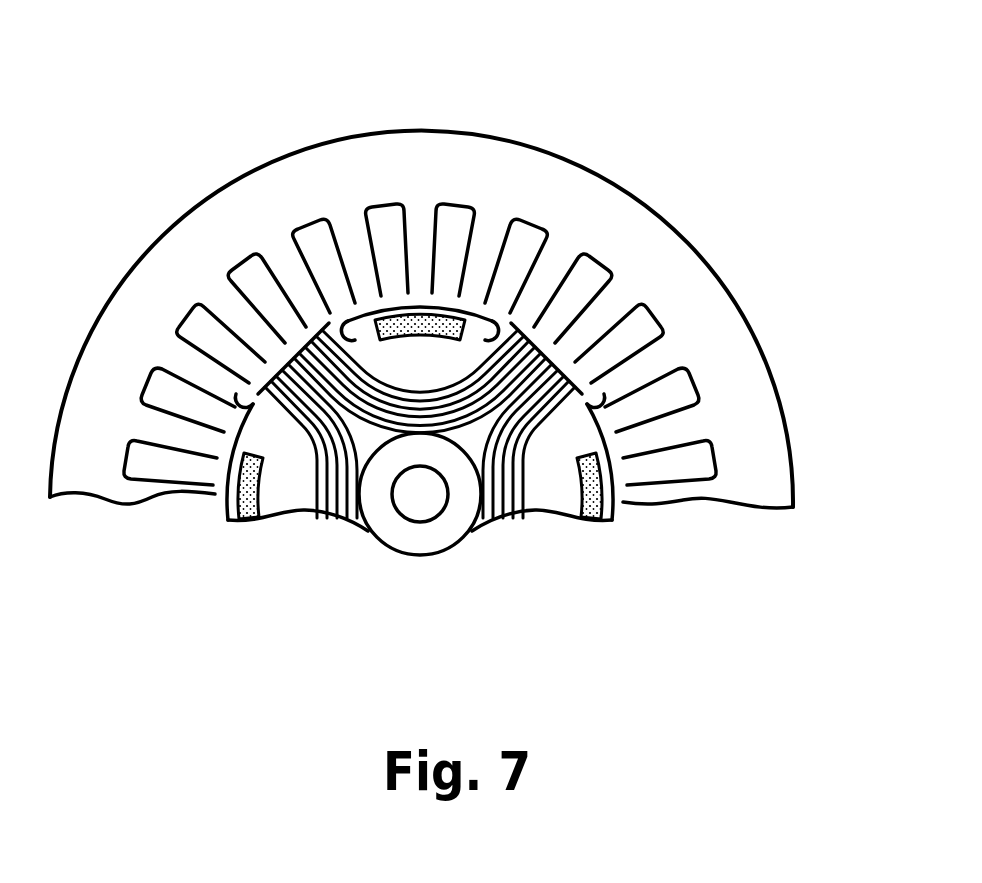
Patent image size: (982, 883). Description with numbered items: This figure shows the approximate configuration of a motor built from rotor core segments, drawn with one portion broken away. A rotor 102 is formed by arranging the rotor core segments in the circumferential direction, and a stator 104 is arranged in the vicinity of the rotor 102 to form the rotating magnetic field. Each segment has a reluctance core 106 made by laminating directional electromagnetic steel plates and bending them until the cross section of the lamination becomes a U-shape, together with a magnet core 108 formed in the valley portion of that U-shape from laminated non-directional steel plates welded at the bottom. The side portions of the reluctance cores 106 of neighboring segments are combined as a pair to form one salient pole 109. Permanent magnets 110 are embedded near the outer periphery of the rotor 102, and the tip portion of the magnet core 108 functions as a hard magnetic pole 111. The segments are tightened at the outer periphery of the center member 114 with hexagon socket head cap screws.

The rotor 102 is at (693, 380).
The stator 104 is at (678, 216).
The reluctance core 106 is at (540, 347).
The magnet core 108 is at (378, 362).
The salient pole 109 is at (556, 343).
The permanent magnet 110 is at (478, 300).
The hard magnetic pole 111 is at (420, 320).
The center member 114 is at (438, 538).